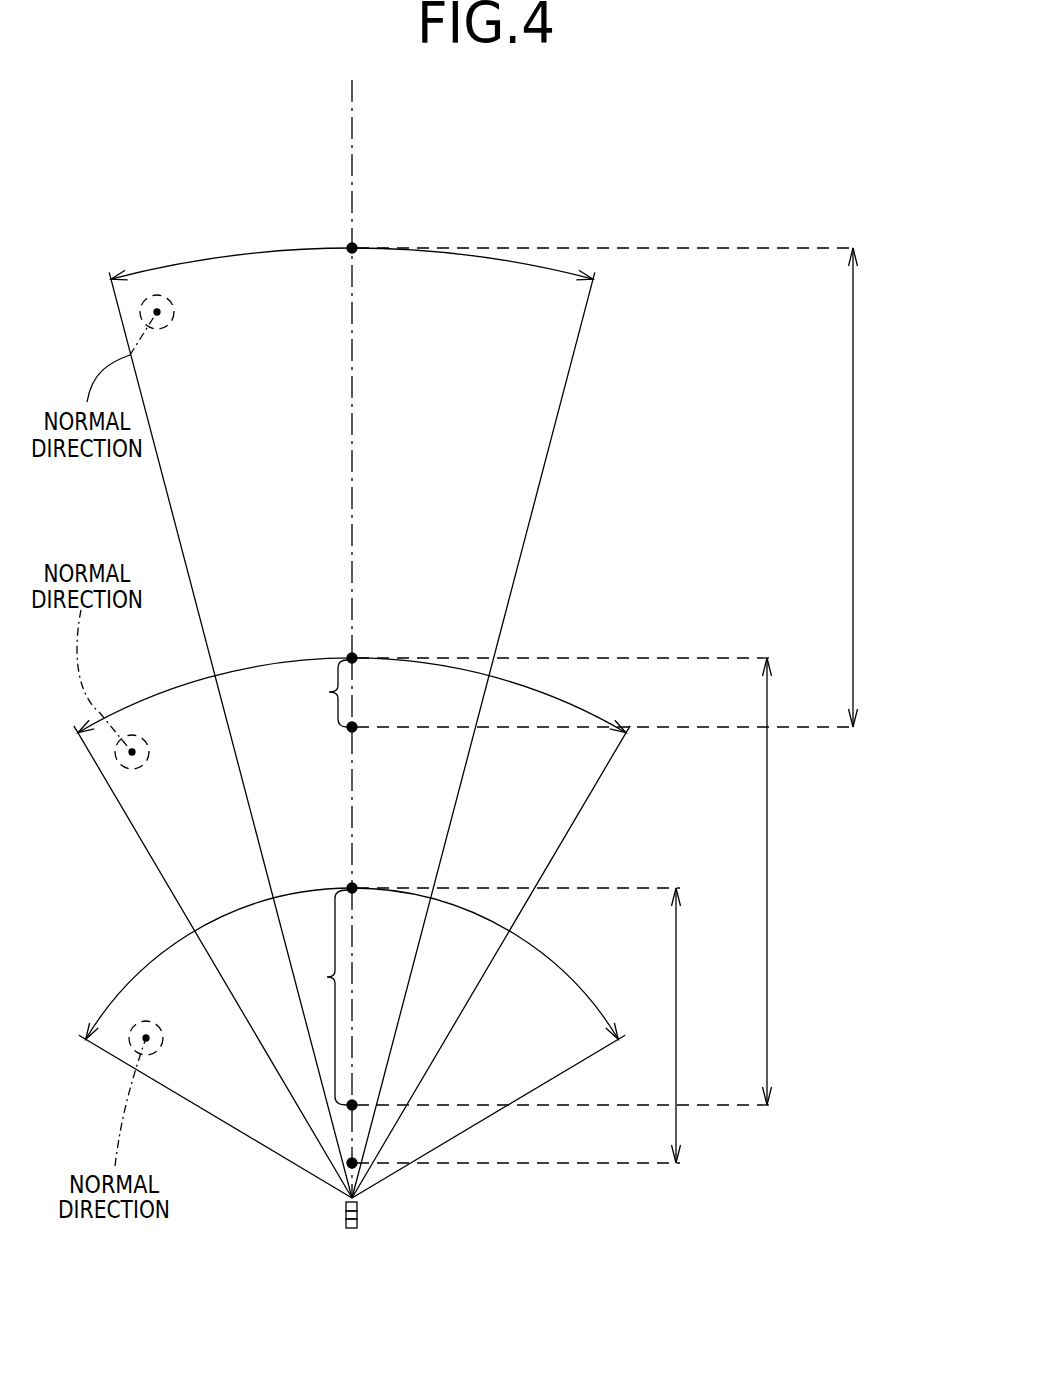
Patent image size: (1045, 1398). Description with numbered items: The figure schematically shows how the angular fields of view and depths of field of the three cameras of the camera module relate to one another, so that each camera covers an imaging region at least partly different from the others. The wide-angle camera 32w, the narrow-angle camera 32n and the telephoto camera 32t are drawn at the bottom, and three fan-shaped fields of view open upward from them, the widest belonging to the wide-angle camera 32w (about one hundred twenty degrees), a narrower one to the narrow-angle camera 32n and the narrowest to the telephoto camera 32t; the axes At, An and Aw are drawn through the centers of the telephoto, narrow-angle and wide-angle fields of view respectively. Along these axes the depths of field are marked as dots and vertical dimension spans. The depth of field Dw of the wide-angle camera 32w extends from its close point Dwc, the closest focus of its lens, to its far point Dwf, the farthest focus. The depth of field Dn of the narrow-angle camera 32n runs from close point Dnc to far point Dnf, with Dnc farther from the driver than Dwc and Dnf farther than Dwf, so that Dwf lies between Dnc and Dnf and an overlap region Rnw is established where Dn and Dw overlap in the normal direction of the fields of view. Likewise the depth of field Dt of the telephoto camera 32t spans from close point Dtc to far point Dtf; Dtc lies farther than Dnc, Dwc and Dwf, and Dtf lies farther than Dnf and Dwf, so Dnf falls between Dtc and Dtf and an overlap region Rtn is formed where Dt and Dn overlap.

The optical axis of telephoto camera At is at (353, 397).
The optical axis of normal camera An is at (353, 772).
The optical axis of wide-angle camera Aw is at (353, 997).
The far point Dtf is at (354, 246).
The far point Dnf is at (354, 656).
The far point Dwf is at (354, 886).
The close point Dtc is at (346, 729).
The close point Dnc is at (346, 1108).
The close point Dwc is at (346, 1167).
The depth of field Dt is at (854, 466).
The depth of field Dn is at (768, 906).
The depth of field Dw is at (677, 995).
The overlap region Rtn is at (314, 693).
The overlap region Rnw is at (328, 976).
The wide-angle camera 32w is at (358, 1207).
The narrow-angle camera 32n is at (345, 1215).
The telephoto camera 32t is at (358, 1225).